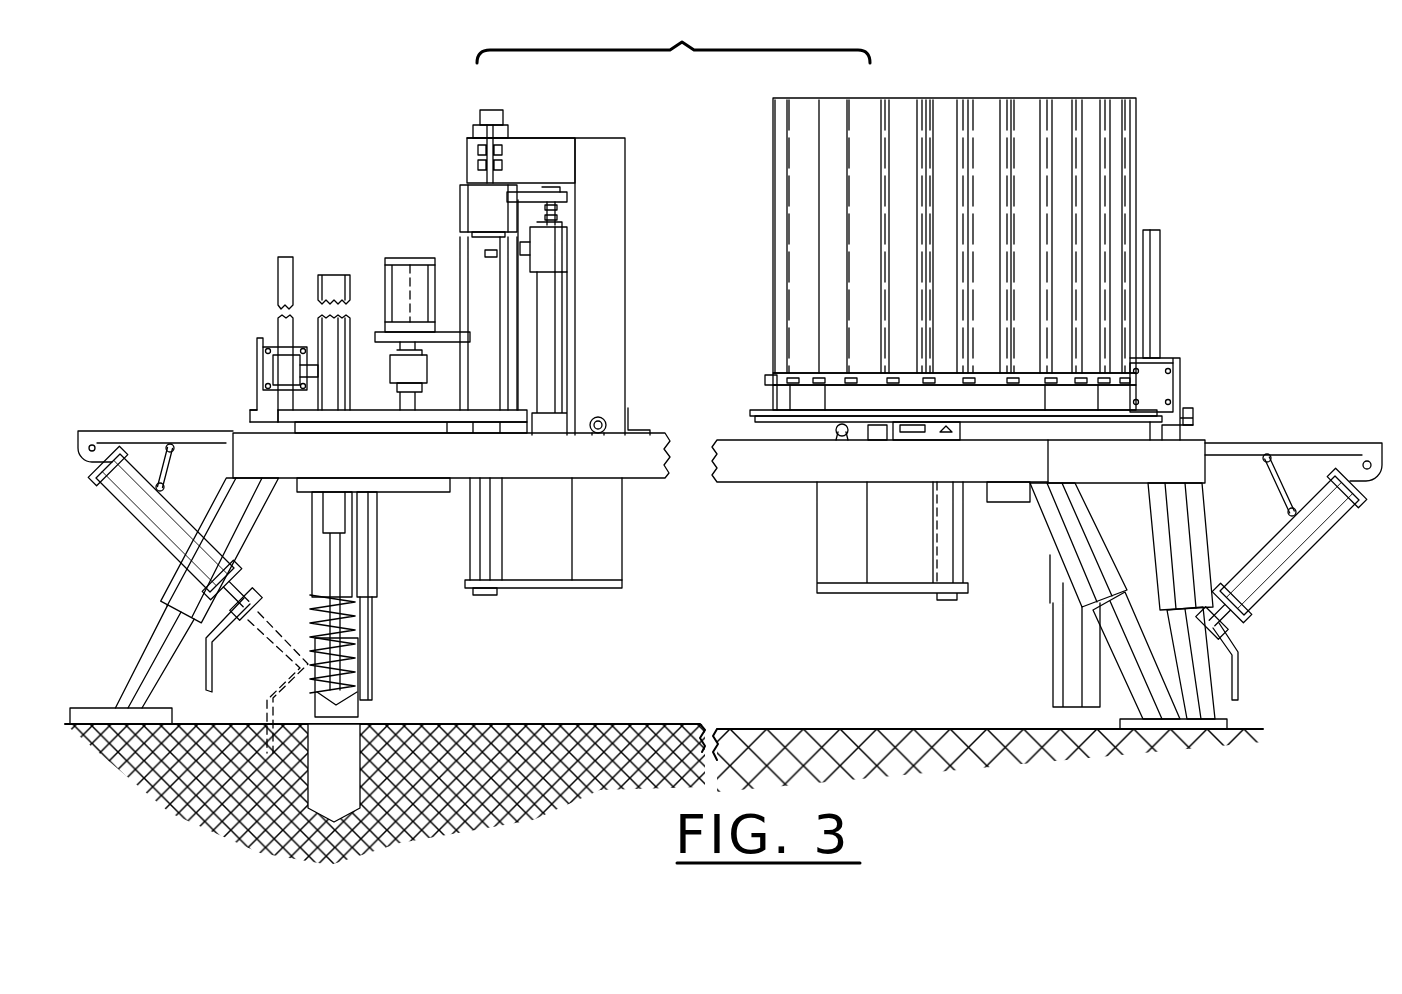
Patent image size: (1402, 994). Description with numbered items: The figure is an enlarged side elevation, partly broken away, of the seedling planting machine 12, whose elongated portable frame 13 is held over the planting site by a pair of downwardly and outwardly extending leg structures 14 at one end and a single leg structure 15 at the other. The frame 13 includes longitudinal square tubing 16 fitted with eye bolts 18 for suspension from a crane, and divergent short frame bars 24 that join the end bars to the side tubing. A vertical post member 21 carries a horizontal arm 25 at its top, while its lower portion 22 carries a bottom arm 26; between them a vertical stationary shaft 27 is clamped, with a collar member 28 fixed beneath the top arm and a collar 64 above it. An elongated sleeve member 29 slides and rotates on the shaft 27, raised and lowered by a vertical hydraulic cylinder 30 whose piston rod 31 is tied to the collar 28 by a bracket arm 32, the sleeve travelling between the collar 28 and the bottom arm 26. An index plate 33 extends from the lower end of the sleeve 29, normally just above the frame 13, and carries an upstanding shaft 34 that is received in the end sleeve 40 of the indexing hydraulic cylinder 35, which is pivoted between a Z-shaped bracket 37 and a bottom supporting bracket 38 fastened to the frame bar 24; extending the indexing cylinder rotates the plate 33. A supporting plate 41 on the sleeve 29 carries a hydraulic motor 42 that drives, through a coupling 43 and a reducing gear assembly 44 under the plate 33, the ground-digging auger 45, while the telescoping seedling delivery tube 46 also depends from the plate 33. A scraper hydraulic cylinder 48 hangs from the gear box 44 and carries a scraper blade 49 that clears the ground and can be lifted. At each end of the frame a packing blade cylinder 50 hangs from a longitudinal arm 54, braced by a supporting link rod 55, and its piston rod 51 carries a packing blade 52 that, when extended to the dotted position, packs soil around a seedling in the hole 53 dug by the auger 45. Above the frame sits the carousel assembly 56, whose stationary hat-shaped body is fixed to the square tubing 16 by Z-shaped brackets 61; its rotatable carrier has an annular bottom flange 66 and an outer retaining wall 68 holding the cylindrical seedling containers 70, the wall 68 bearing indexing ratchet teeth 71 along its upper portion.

The seedling planting machine 12 is at (1235, 65).
The portable frame 13 is at (215, 433).
The supporting leg structures 14 is at (1205, 712).
The supporting leg structure 15 is at (150, 636).
The longitudinal square tubing 16 is at (780, 476).
The eye bolts 18 is at (599, 417).
The vertical post member 21 is at (627, 170).
The lower portion of post member 22 is at (617, 545).
The divergent short frame bars 24 is at (323, 474).
The horizontal arm 25 is at (548, 140).
The bottom arm 26 is at (527, 590).
The vertical stationary shaft 27 is at (500, 540).
The collar member 28 is at (467, 203).
The vertical sleeve member 29 is at (503, 301).
The vertical hydraulic cylinder 30 is at (553, 350).
The piston rod 31 is at (562, 222).
The bracket arm 32 is at (530, 192).
The index plate 33 is at (427, 422).
The upstanding vertical shaft 34 is at (292, 257).
The indexing hydraulic cylinder 35 is at (1165, 387).
The Z-shaped bracket 37 is at (258, 345).
The bottom supporting bracket 38 is at (240, 412).
The end sleeve 40 is at (278, 373).
The horizontal supporting plate 41 is at (447, 345).
The hydraulic motor 42 is at (405, 268).
The coupling 43 is at (392, 370).
The reducing gear assembly 44 is at (420, 492).
The ground-digging auger 45 is at (357, 650).
The seedling delivery tube 46 is at (380, 560).
The scraper hydraulic cylinder 48 is at (335, 285).
The scraper blade 49 is at (360, 708).
The packing blade cylinder 50 is at (132, 518).
The piston rod 51 is at (252, 582).
The packing blade 52 is at (210, 655).
The hole 53 is at (360, 750).
The longitudinal arm 54 is at (125, 430).
The supporting link rod 55 is at (172, 470).
The carousel assembly 56 is at (769, 221).
The Z-shaped brackets 61 is at (920, 440).
The collar 64 is at (508, 122).
The annular bottom flange 66 is at (845, 412).
The outer retaining wall 68 is at (770, 396).
The seedling containers 70 is at (1065, 108).
The indexing ratchet teeth 71 is at (767, 380).